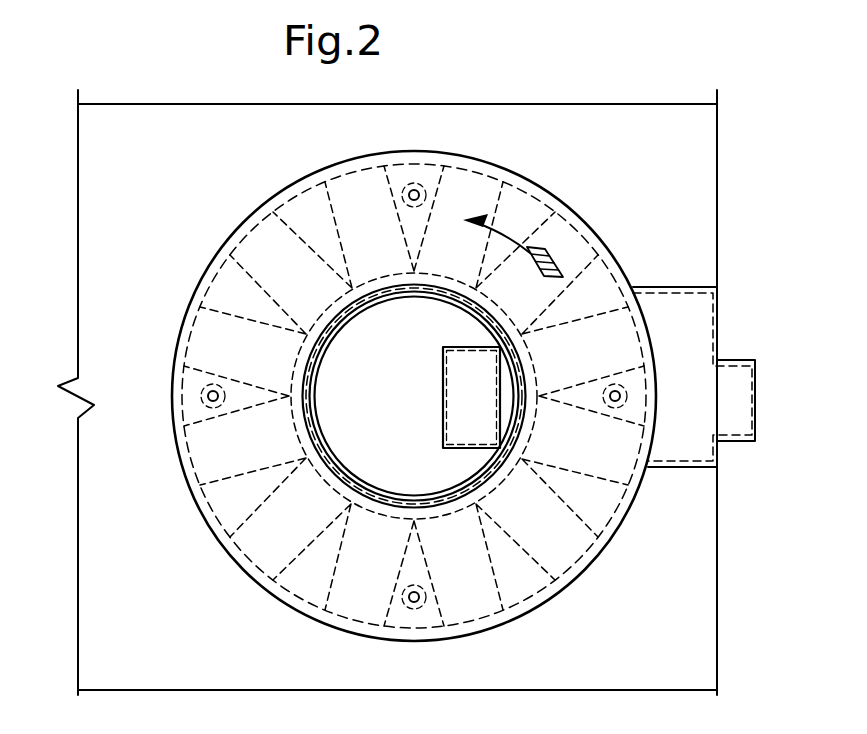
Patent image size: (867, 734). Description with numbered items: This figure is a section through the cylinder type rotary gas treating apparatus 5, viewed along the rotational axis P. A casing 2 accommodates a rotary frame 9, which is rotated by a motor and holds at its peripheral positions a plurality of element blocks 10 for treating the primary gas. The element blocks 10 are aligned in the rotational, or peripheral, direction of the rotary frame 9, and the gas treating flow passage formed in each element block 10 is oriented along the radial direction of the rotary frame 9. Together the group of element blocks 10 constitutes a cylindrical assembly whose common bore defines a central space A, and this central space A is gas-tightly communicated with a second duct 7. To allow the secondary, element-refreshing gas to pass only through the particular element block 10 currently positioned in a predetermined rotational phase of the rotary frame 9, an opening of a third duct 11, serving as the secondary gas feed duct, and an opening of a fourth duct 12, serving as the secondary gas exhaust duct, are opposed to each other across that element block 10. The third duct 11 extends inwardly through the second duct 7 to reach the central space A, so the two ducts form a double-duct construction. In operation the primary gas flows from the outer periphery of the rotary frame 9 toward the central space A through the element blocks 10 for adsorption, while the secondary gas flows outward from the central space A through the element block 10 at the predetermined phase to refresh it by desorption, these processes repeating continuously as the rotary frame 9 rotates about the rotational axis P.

The casing 2 is at (228, 104).
The cylinder type rotary gas treating apparatus 5 is at (184, 280).
The second duct 7 is at (307, 425).
The rotary frame 9 is at (242, 223).
The element block 10 is at (213, 338).
The third duct 11 is at (444, 437).
The fourth duct 12 is at (737, 442).
The central space A is at (371, 369).
The rotational axis P is at (412, 402).